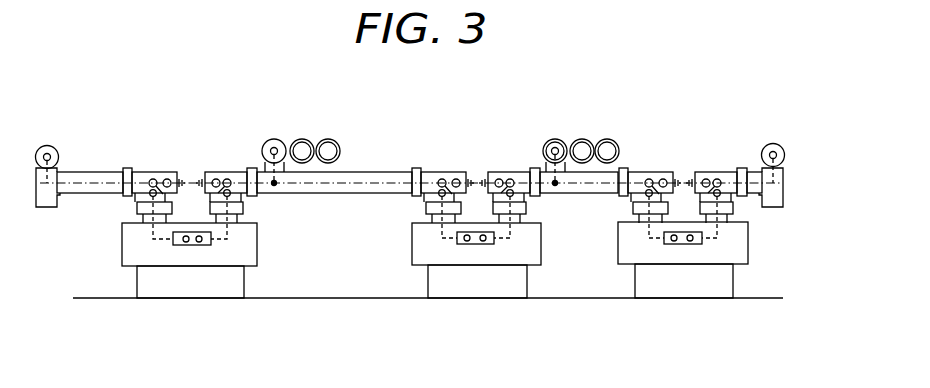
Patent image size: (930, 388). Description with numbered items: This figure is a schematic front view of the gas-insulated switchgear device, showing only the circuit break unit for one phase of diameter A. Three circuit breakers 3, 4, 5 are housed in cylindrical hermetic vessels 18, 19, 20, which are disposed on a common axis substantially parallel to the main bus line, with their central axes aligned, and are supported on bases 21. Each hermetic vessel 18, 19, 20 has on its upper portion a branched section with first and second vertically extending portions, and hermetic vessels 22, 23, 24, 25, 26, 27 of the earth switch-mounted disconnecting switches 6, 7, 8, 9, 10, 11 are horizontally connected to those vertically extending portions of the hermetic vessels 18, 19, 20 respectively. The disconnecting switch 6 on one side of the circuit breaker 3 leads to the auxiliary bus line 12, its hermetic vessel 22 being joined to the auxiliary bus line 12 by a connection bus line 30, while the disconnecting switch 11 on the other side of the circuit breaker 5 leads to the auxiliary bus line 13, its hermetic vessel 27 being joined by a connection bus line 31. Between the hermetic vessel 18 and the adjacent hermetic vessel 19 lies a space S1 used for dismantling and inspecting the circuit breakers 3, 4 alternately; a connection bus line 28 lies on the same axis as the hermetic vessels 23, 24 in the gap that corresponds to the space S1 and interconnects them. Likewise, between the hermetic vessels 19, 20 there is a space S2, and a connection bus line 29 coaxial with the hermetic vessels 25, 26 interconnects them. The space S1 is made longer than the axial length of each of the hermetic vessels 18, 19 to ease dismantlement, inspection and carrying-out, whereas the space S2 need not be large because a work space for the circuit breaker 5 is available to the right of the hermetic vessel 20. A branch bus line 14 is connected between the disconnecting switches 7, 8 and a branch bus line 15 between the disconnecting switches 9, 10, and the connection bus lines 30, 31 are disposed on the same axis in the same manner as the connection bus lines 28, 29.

The circuit breaker 3 is at (183, 272).
The circuit breaker 4 is at (449, 271).
The circuit breaker 5 is at (659, 269).
The earth switch-mounted disconnecting switch 6 is at (168, 172).
The earth switch-mounted disconnecting switch 7 is at (215, 179).
The earth switch-mounted disconnecting switch 8 is at (440, 178).
The earth switch-mounted disconnecting switch 9 is at (500, 178).
The earth switch-mounted disconnecting switch 10 is at (658, 178).
The earth switch-mounted disconnecting switch 11 is at (716, 178).
The auxiliary bus line 12 is at (47, 146).
The auxiliary bus line 13 is at (777, 143).
The branch bus line 14 is at (274, 140).
The branch bus line 15 is at (555, 138).
The cylindrical hermetic vessel 18 is at (122, 250).
The cylindrical hermetic vessel 19 is at (412, 247).
The cylindrical hermetic vessel 20 is at (618, 248).
The base 21 is at (247, 278).
The hermetic vessel for disconnecting switch 22 is at (130, 167).
The hermetic vessel for disconnecting switch 23 is at (242, 170).
The hermetic vessel for disconnecting switch 24 is at (455, 168).
The hermetic vessel for disconnecting switch 25 is at (522, 168).
The hermetic vessel for disconnecting switch 26 is at (640, 168).
The hermetic vessel for disconnecting switch 27 is at (697, 168).
The connection bus line 28 is at (363, 170).
The connection bus line 29 is at (584, 158).
The connection bus line 30 is at (92, 170).
The connection bus line 31 is at (757, 168).
The space S1 is at (332, 278).
The space S2 is at (578, 278).